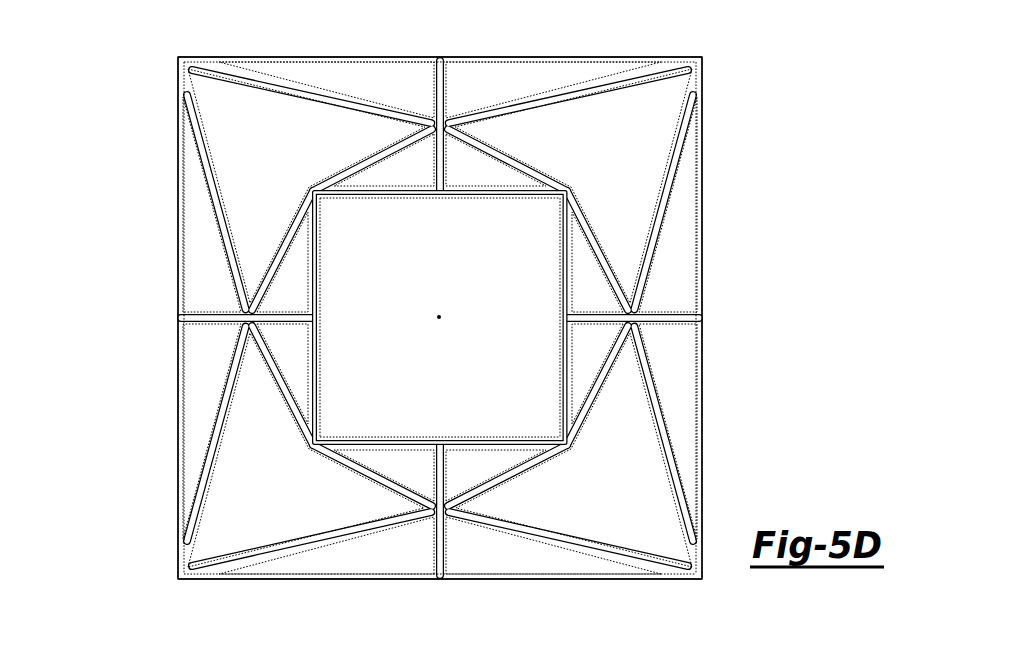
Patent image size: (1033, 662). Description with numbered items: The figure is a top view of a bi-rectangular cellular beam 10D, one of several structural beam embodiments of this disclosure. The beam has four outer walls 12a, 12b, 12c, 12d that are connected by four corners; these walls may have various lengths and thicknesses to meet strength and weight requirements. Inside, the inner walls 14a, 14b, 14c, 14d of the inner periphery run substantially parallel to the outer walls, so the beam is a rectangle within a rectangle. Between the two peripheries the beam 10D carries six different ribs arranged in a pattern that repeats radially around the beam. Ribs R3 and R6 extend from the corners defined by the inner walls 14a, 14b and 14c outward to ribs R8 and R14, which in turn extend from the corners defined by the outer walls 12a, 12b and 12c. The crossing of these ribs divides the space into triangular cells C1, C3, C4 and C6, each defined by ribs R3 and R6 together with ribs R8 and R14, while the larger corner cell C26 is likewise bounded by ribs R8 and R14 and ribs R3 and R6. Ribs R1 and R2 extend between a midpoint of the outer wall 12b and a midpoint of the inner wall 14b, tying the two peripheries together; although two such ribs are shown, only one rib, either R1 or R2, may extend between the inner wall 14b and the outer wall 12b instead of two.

The bi-rectangular cellular beam 10D is at (120, 42).
The outer wall 12a is at (440, 54).
The outer wall 12b is at (702, 318).
The outer wall 12c is at (440, 580).
The outer wall 12d is at (178, 318).
The inner wall 14a is at (442, 198).
The inner wall 14b is at (562, 317).
The inner wall 14c is at (441, 437).
The inner wall 14d is at (320, 317).
The rib R1 is at (448, 62).
The rib R2 is at (432, 180).
The rib R3 is at (542, 174).
The rib R6 is at (339, 172).
The rib R8 is at (315, 99).
The rib R14 is at (564, 100).
The triangular cell C1 is at (440, 317).
The triangular cell C3 is at (440, 318).
The triangular cell C4 is at (440, 318).
The triangular cell C6 is at (440, 317).
The cell C26 is at (440, 318).